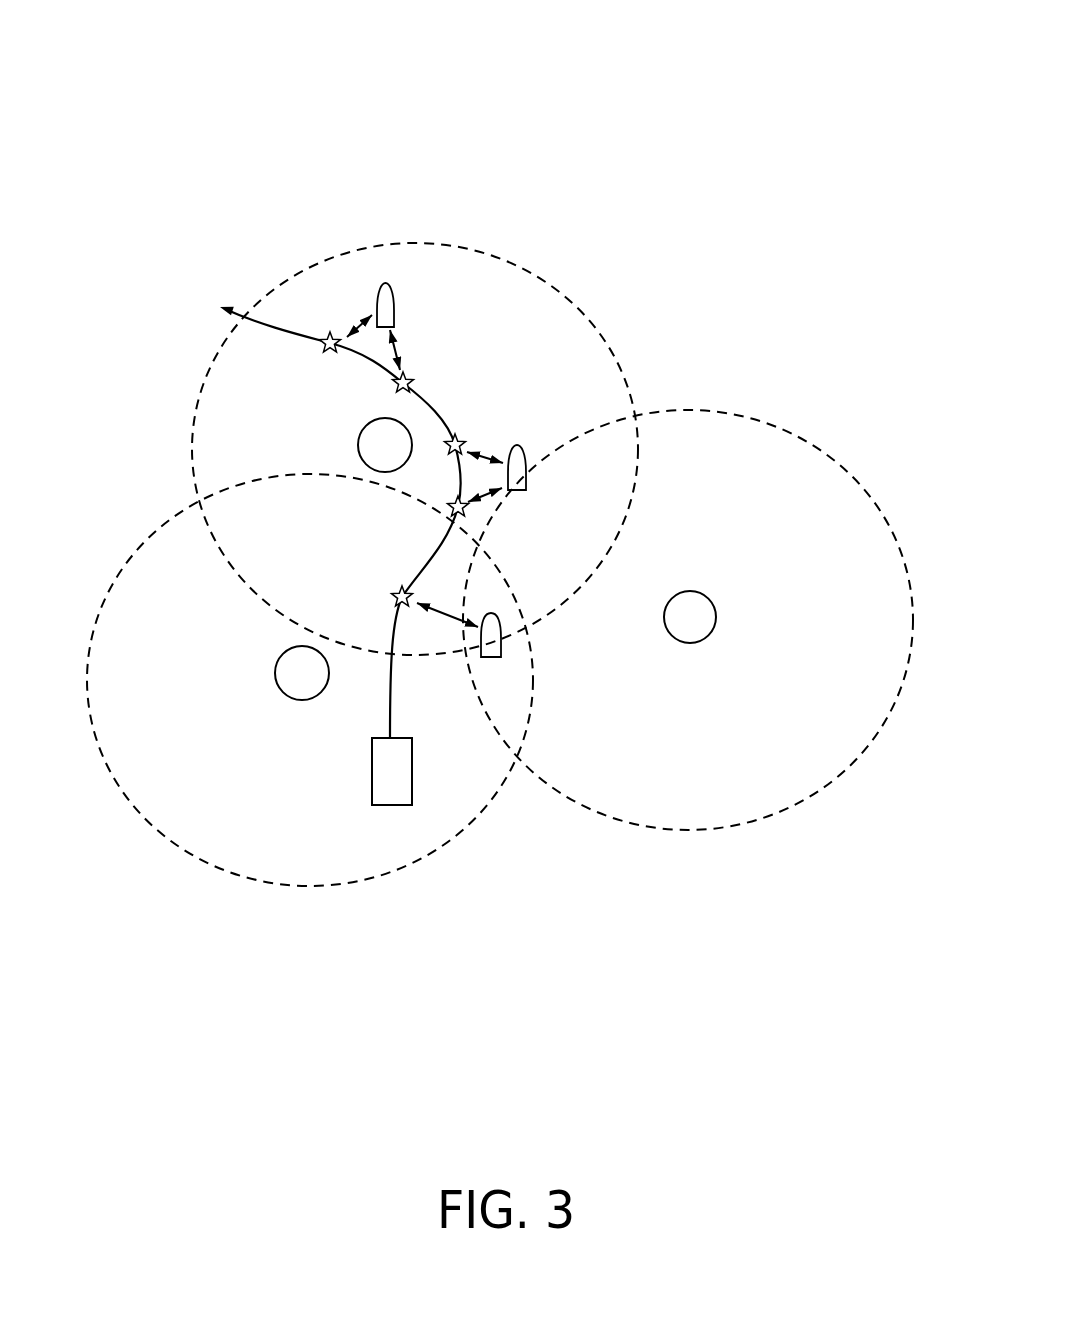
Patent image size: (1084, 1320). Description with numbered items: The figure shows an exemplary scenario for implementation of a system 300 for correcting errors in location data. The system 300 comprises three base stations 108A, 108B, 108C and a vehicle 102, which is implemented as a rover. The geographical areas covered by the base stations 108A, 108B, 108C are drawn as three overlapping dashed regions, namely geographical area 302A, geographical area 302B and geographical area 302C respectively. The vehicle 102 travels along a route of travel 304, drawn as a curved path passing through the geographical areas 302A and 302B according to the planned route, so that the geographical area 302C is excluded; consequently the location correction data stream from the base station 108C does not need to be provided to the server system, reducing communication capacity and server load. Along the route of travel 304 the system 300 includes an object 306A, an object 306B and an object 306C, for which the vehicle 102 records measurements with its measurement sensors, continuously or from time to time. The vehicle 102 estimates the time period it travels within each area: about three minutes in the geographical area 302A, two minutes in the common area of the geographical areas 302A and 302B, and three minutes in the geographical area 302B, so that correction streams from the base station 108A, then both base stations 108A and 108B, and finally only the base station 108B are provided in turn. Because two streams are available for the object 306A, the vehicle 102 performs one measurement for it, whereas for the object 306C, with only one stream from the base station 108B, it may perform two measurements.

The system 300 is at (782, 78).
The geographical area 302A is at (293, 888).
The geographical area 302B is at (453, 247).
The geographical area 302C is at (828, 458).
The base station 108A is at (292, 698).
The base station 108B is at (358, 444).
The base station 108C is at (697, 593).
The route of travel 304 is at (434, 410).
The object 306A is at (501, 657).
The object 306B is at (527, 447).
The object 306C is at (378, 303).
The vehicle 102 is at (393, 782).